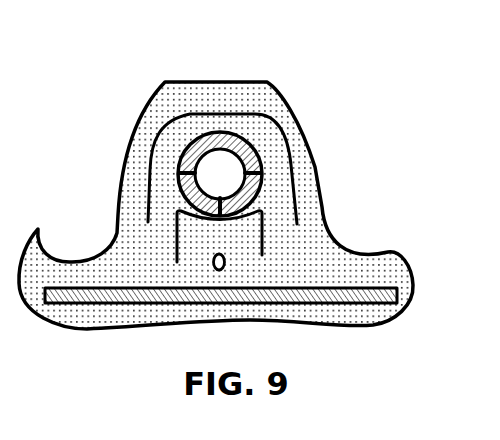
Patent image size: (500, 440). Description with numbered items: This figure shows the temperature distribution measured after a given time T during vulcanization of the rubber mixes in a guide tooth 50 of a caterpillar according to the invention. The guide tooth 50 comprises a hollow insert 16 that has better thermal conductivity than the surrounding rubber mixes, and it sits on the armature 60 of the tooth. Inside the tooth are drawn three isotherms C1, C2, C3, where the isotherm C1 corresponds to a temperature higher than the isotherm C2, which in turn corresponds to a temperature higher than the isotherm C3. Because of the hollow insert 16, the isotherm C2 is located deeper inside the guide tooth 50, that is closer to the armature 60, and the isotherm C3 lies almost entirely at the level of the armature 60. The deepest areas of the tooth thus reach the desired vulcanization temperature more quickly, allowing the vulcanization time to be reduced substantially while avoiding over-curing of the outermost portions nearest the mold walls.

The guide tooth 50 is at (193, 90).
The hollow insert 16 is at (185, 139).
The isotherm C1 is at (280, 153).
The isotherm C2 is at (266, 245).
The isotherm C3 is at (228, 262).
The armature 60 is at (248, 303).